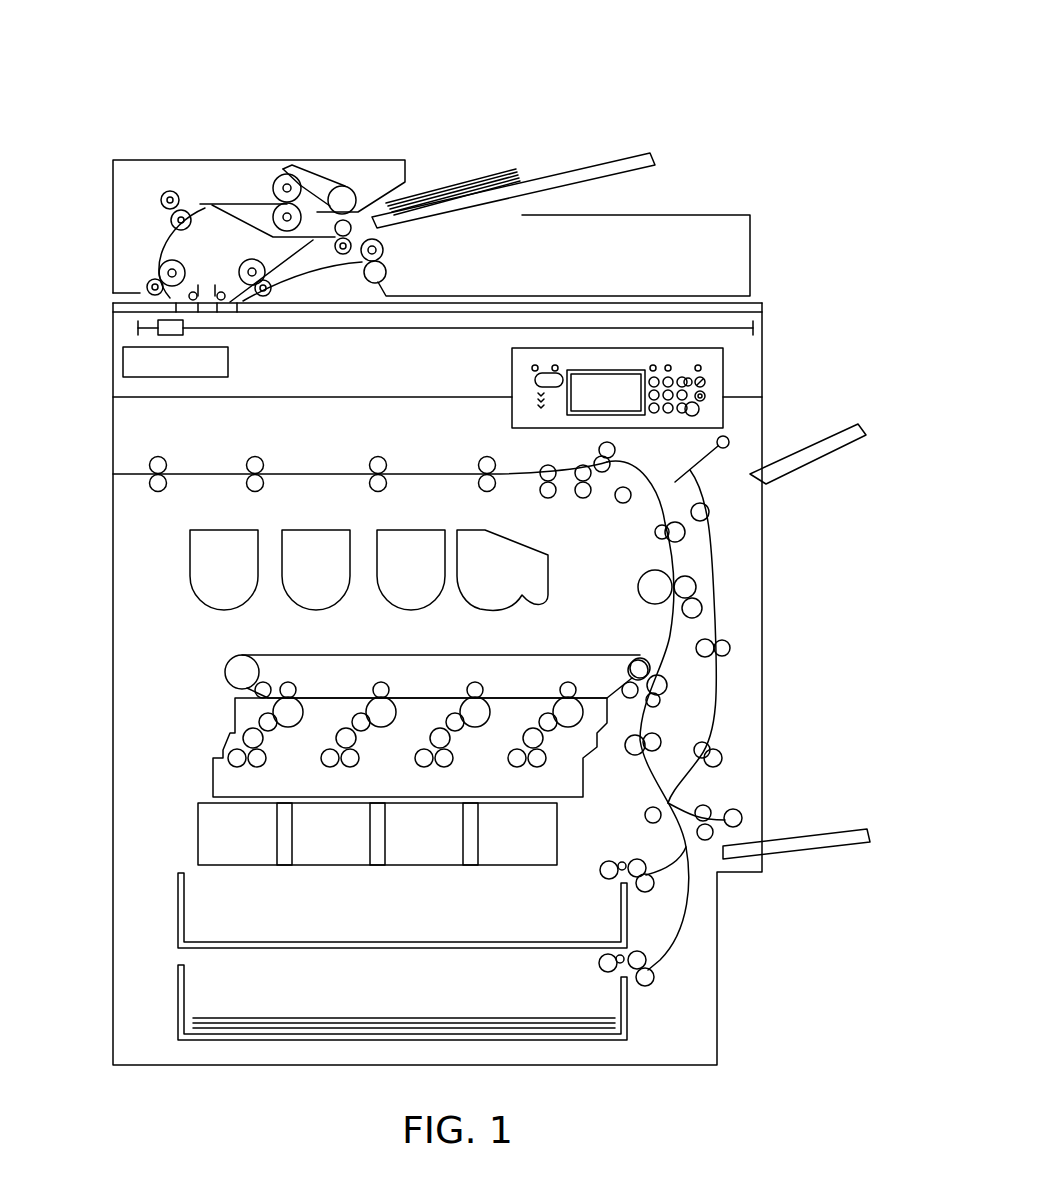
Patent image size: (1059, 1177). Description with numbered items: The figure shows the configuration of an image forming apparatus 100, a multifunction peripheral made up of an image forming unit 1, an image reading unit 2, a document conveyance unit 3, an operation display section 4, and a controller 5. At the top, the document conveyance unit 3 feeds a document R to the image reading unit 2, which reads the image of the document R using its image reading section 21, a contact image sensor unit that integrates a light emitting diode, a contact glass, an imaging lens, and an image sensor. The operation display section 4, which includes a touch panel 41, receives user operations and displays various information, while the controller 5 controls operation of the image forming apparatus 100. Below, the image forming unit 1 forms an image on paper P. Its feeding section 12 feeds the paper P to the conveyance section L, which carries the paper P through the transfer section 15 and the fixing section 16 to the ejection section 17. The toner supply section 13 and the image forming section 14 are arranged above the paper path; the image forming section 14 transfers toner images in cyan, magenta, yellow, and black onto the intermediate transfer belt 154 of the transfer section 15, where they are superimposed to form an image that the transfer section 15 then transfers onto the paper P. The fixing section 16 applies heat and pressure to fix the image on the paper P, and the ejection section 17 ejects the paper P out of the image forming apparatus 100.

The image forming apparatus 100 is at (665, 88).
The image forming unit 1 is at (800, 542).
The image reading unit 2 is at (767, 337).
The document conveyance unit 3 is at (768, 260).
The operation display section 4 is at (661, 340).
The touch panel 41 is at (592, 372).
The controller 5 is at (123, 362).
The image reading section 21 is at (185, 330).
The feeding section 12 is at (168, 992).
The toner supply section 13 is at (162, 570).
The image forming section 14 is at (157, 772).
The transfer section 15 is at (358, 653).
The intermediate transfer belt 154 is at (377, 655).
The fixing section 16 is at (643, 565).
The ejection section 17 is at (142, 458).
The conveyance section L is at (305, 467).
The document R is at (508, 168).
The paper P is at (285, 1030).